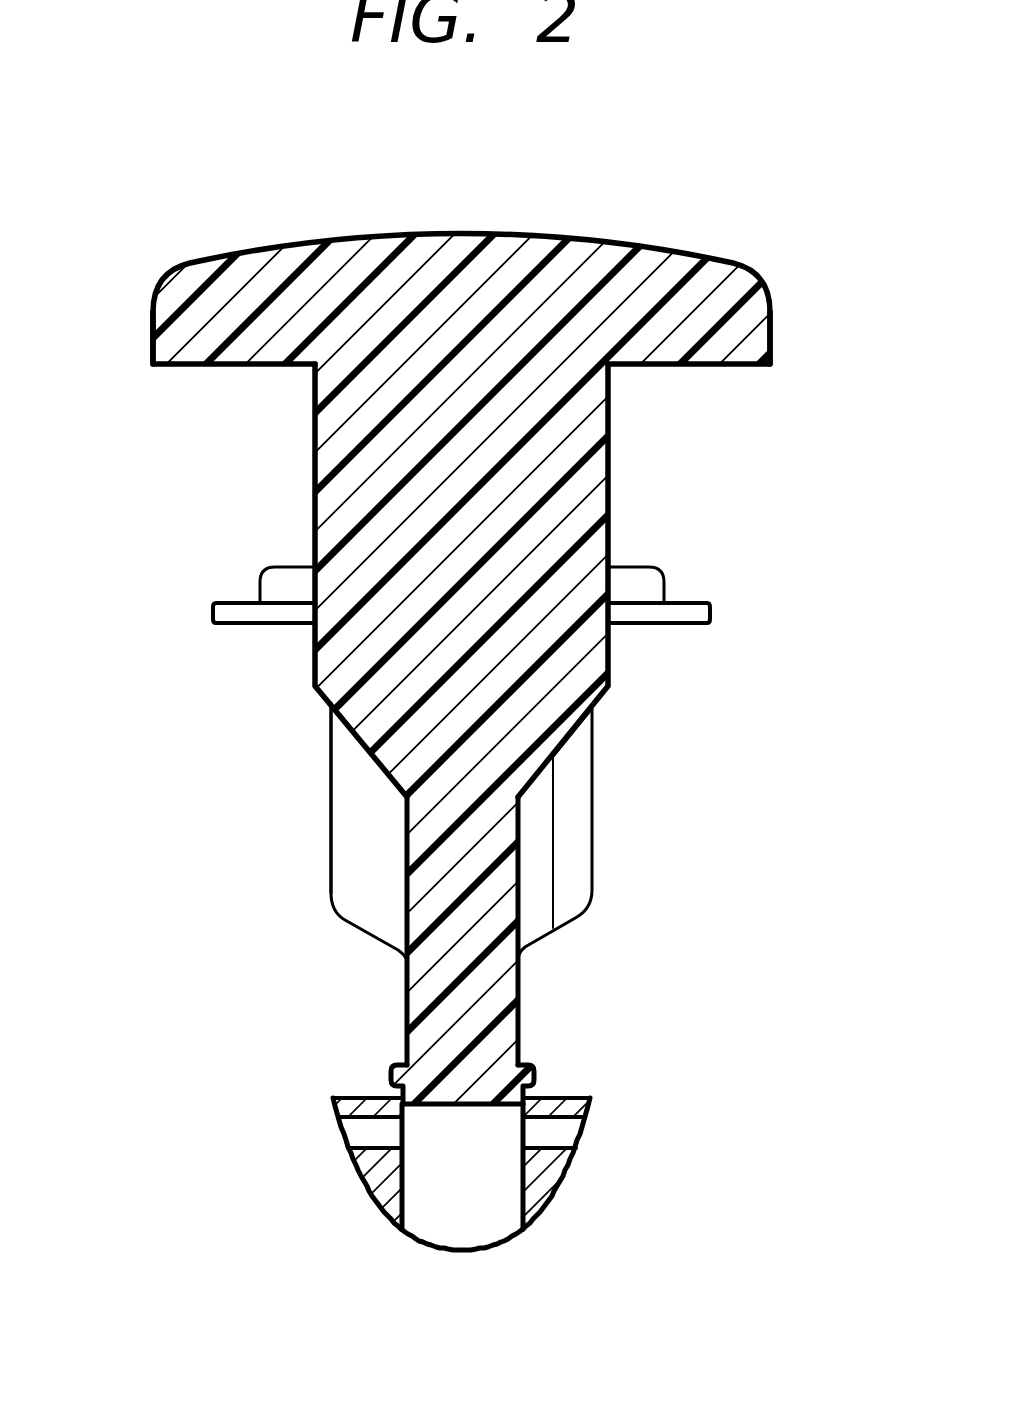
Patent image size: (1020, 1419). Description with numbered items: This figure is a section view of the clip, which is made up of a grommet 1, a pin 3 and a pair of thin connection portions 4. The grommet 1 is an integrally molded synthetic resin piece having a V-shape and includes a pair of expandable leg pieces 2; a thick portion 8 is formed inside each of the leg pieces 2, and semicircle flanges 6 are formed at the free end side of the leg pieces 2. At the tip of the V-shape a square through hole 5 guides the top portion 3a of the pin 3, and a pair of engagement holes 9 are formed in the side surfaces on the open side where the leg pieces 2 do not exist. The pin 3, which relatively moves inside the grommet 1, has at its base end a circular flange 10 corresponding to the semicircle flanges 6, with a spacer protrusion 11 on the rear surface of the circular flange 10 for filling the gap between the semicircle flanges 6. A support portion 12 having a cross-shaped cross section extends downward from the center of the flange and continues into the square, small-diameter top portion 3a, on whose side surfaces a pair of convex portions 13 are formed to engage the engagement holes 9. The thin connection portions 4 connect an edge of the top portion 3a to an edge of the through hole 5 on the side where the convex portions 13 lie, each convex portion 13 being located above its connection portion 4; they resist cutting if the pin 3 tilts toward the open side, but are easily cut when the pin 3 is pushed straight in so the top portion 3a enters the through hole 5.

The grommet 1 is at (355, 891).
The leg pieces 2 is at (350, 788).
The pin 3 is at (597, 505).
The top portion 3a is at (513, 1000).
The thin connection portions 4 is at (394, 1095).
The through hole 5 is at (431, 1226).
The semicircle flanges 6 is at (223, 609).
The thick portion 8 is at (538, 914).
The engagement holes 9 is at (360, 1133).
The circular flange 10 is at (526, 257).
The spacer protrusion 11 is at (186, 318).
The support portion 12 is at (346, 472).
The convex portions 13 is at (392, 1082).